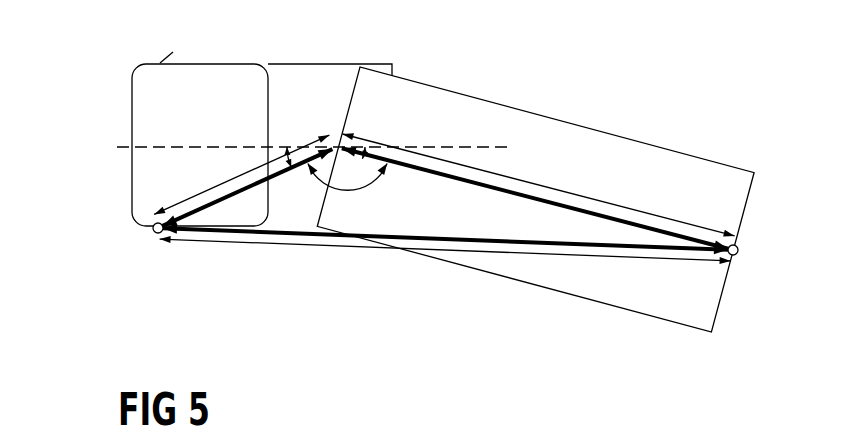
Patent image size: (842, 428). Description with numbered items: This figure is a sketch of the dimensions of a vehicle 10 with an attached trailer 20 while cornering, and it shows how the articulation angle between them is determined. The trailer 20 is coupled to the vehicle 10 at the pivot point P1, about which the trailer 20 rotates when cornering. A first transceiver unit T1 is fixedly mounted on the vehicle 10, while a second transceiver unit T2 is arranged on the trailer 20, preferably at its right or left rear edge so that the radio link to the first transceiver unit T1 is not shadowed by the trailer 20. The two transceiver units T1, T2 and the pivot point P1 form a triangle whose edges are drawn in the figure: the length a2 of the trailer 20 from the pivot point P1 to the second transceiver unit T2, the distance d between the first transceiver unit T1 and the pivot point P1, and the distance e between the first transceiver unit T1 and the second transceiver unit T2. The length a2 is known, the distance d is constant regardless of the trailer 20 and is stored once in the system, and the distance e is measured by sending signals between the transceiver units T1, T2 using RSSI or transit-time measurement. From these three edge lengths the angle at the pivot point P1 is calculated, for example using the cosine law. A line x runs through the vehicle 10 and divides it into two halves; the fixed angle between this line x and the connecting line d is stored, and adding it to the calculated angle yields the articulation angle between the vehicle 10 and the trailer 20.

The vehicle 10 is at (132, 183).
The trailer 20 is at (508, 106).
The line x is at (120, 142).
The first transceiver unit T1 is at (142, 244).
The second transceiver unit T2 is at (752, 253).
The pivot point P1 is at (446, 175).
The distance d is at (241, 174).
The length of the trailer a2 is at (539, 184).
The distance e is at (445, 259).